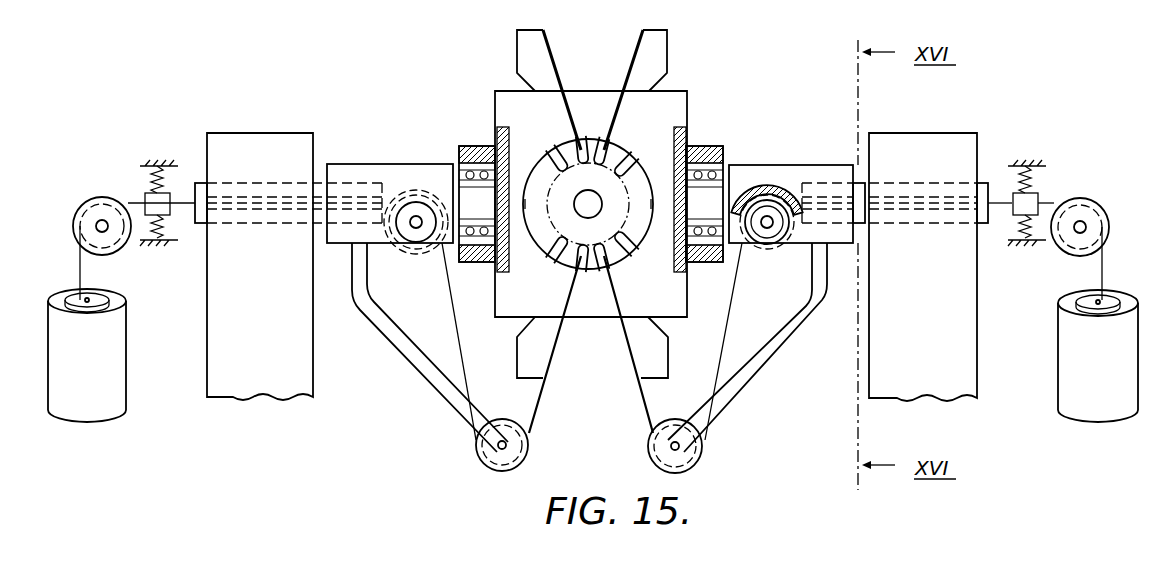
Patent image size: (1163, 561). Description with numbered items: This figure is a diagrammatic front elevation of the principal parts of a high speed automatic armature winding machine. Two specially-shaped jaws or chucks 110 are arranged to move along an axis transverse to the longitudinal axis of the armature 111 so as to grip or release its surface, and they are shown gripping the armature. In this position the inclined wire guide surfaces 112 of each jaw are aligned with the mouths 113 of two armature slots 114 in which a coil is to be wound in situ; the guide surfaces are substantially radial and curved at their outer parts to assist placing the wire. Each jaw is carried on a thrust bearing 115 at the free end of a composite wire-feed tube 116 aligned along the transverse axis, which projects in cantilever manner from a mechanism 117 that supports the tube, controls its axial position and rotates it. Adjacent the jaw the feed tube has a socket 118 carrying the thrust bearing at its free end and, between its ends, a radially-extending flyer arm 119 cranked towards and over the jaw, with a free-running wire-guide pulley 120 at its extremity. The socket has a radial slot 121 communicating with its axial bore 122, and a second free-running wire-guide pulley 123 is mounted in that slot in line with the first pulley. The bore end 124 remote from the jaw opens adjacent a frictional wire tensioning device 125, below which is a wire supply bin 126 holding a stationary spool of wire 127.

The jaw 110 is at (512, 300).
The armature 111 is at (588, 140).
The inclined wire guide surface 112 is at (620, 97).
The mouth 113 is at (603, 270).
The armature slot 114 is at (615, 252).
The thrust bearing 115 is at (729, 165).
The composite wire-feed tube 116 is at (860, 178).
The mechanism 117 is at (947, 143).
The socket 118 is at (785, 168).
The flyer arm 119 is at (793, 338).
The wire-guide pulley 120 is at (701, 445).
The radial slot 121 is at (752, 188).
The axial bore 122 is at (765, 243).
The second wire-guide pulley 123 is at (740, 252).
The bore end 124 is at (995, 212).
The frictional wire tensioning device 125 is at (1039, 196).
The wire supply bin 126 is at (1123, 294).
The spool of wire 127 is at (1077, 303).